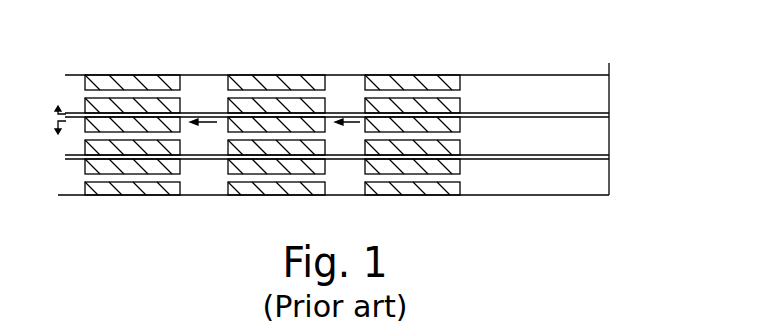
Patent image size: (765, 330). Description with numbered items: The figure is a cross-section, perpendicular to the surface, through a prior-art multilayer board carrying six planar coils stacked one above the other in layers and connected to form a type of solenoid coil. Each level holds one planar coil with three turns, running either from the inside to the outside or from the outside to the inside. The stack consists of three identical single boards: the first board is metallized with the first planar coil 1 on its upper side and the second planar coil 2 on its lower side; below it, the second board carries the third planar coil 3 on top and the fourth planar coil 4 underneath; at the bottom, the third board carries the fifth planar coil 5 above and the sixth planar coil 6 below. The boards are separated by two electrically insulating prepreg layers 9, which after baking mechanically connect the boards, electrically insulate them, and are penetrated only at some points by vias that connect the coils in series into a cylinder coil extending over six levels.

The first planar coil 1 is at (478, 77).
The second planar coil 2 is at (467, 107).
The third planar coil 3 is at (465, 121).
The fourth planar coil 4 is at (490, 148).
The fifth planar coil 5 is at (465, 165).
The sixth planar coil 6 is at (485, 188).
The prepreg layer 9 is at (598, 155).